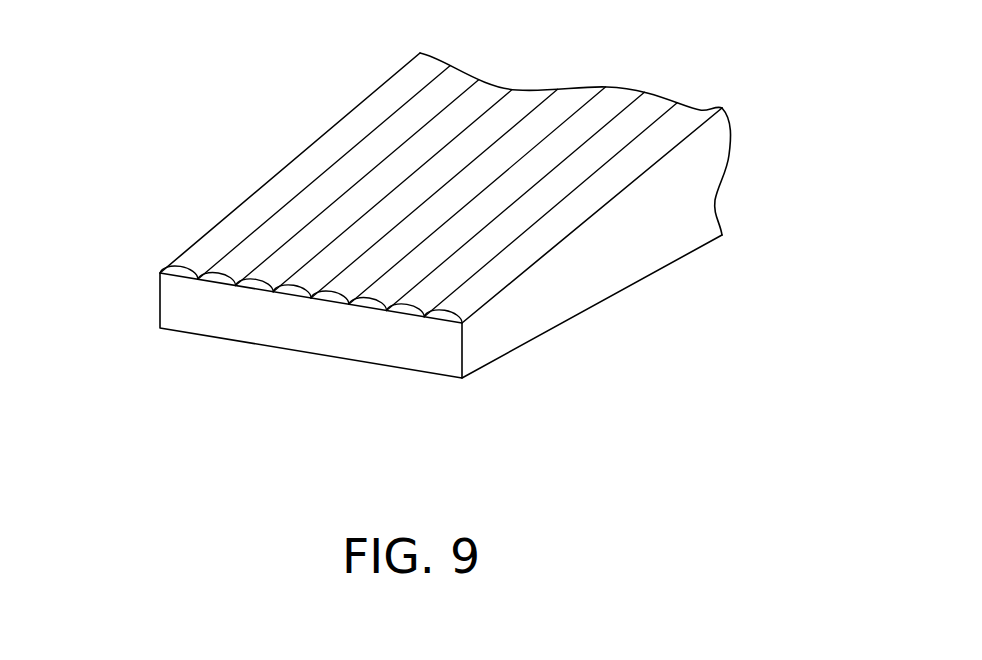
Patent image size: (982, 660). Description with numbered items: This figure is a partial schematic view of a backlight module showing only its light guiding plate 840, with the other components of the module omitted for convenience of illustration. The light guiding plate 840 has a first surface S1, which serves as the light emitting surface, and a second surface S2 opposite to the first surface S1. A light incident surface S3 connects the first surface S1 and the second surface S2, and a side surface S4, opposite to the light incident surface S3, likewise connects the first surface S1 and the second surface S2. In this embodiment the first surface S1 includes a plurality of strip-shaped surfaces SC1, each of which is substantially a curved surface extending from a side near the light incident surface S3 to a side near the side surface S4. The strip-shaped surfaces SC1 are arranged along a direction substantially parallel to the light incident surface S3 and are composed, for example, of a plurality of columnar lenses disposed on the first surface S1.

The light guiding plate 840 is at (462, 244).
The first surface S1 is at (441, 185).
The strip-shaped surfaces SC1 is at (213, 250).
The second surface S2 is at (554, 332).
The light incident surface S3 is at (388, 345).
The side surface S4 is at (745, 118).